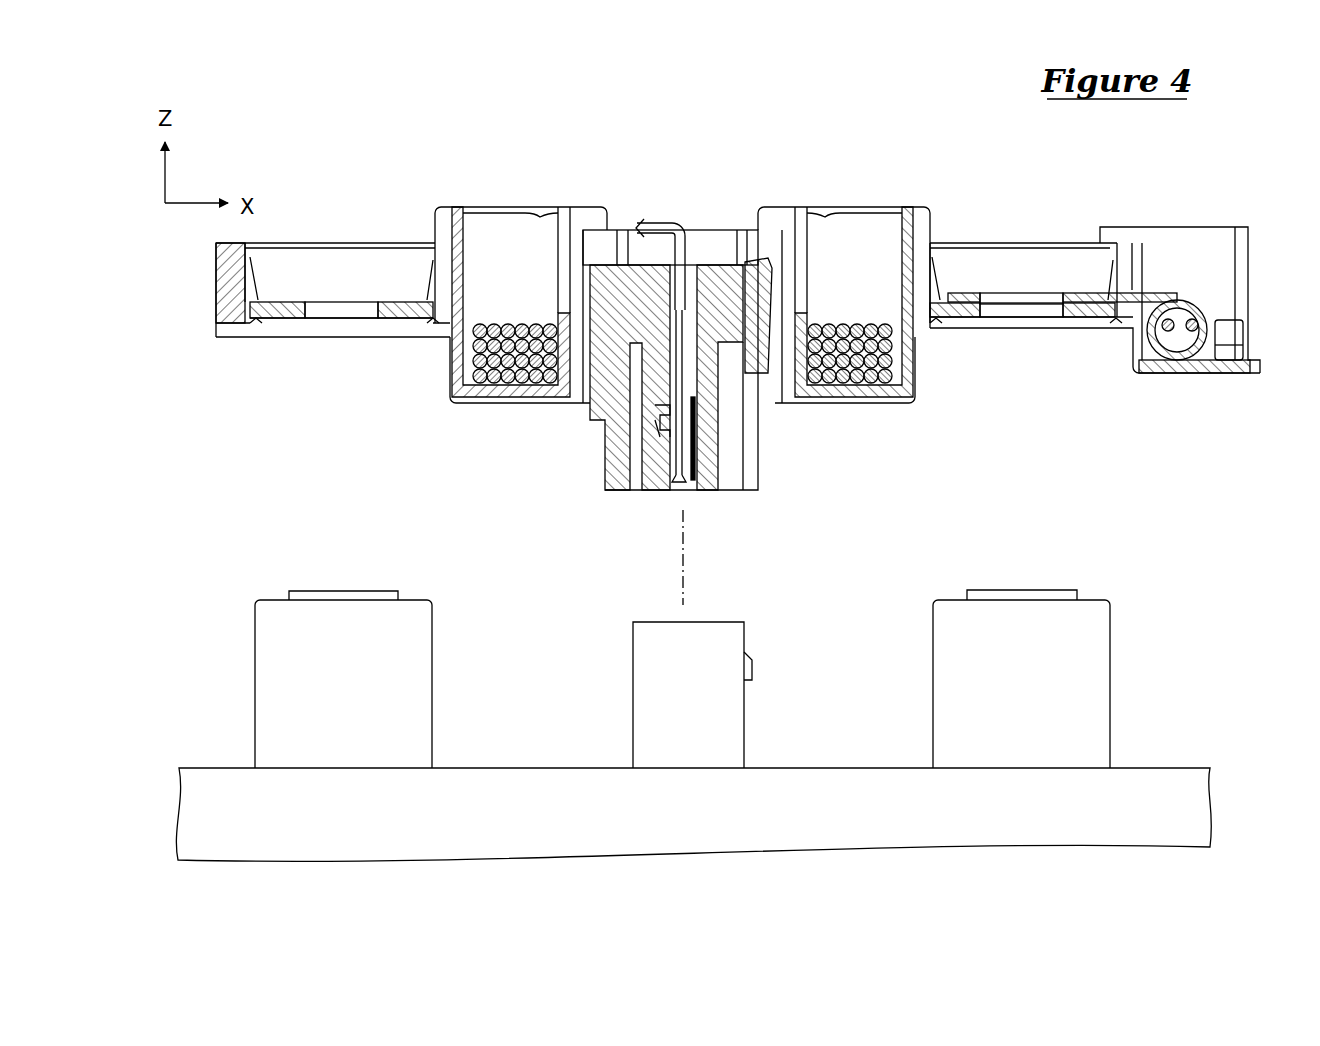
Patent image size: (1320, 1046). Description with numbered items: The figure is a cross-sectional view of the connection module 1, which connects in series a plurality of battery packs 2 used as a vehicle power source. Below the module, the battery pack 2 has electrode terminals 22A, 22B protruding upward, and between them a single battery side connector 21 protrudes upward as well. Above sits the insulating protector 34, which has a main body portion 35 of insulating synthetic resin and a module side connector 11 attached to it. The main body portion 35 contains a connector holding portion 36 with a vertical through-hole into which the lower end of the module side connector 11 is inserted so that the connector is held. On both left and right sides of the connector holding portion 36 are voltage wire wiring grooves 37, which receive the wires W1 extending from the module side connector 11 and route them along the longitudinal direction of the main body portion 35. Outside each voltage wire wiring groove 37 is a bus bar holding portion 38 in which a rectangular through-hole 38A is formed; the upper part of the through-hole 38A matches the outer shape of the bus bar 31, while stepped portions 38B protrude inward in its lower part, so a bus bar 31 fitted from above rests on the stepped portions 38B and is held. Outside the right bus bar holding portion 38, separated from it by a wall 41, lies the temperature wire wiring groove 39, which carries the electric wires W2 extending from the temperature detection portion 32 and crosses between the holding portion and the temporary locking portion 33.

The connection module 1 is at (938, 168).
The battery pack 2 is at (1185, 810).
The module side connector 11 is at (605, 460).
The single battery side connector 21 is at (744, 634).
The electrode terminal 22A is at (432, 692).
The electrode terminal 22B is at (1110, 637).
The bus bar 31 is at (287, 300).
The temperature detection portion 32 is at (1200, 300).
The temporary locking portion 33 is at (1238, 333).
The insulating protector 34 is at (446, 203).
The main body portion 35 is at (472, 408).
The connector holding portion 36 is at (727, 230).
The voltage wire wiring groove 37 is at (514, 236).
The bus bar holding portion 38 is at (232, 322).
The through-hole 38A is at (338, 320).
The stepped portion 38B is at (256, 325).
The temperature wire wiring groove 39 is at (1194, 247).
The wall 41 is at (1157, 245).
The wire W1 is at (523, 333).
The electric wire W2 is at (1192, 333).